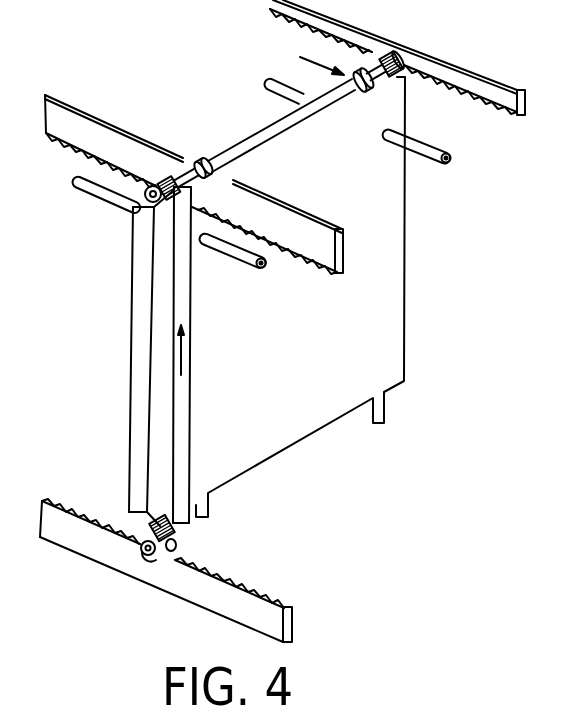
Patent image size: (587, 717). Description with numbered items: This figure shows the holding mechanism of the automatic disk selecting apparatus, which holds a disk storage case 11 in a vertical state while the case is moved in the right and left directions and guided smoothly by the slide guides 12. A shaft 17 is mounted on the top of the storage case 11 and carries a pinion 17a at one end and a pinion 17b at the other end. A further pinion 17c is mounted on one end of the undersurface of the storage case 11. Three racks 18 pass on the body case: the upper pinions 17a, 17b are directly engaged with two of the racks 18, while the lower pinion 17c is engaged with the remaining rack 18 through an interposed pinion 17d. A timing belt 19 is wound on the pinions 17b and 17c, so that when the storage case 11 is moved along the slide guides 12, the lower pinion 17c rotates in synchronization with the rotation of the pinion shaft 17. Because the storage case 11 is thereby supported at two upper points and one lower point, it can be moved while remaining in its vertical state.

The storage case 11 is at (393, 355).
The slide guides 12 is at (452, 155).
The shaft 17 is at (318, 127).
The pinion 17a is at (394, 80).
The pinion 17b is at (148, 204).
The pinion 17c is at (142, 533).
The pinion 17d is at (173, 547).
The racks 18 is at (435, 62).
The timing belt 19 is at (173, 452).